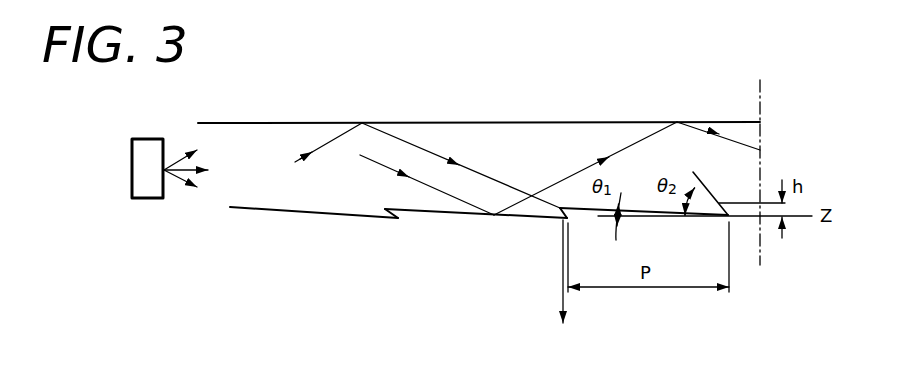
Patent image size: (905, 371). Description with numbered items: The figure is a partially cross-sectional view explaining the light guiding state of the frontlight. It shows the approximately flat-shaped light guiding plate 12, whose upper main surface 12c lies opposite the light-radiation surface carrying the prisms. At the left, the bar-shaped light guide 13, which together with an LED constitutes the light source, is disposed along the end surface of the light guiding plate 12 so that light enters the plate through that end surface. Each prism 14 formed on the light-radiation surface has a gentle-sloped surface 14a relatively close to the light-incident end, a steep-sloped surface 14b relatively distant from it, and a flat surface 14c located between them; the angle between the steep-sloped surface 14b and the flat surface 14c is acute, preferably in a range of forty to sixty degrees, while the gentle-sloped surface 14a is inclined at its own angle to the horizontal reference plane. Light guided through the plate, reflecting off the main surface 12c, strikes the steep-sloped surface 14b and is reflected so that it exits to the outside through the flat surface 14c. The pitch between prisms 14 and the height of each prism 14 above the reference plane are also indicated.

The light guiding plate 12 is at (752, 133).
The main surface 12c is at (452, 122).
The bar-shaped light guide 13 is at (145, 192).
The prism 14 is at (377, 212).
The gentle-sloped surface 14a is at (278, 212).
The steep-sloped surface 14b is at (410, 215).
The flat surface 14c is at (365, 222).